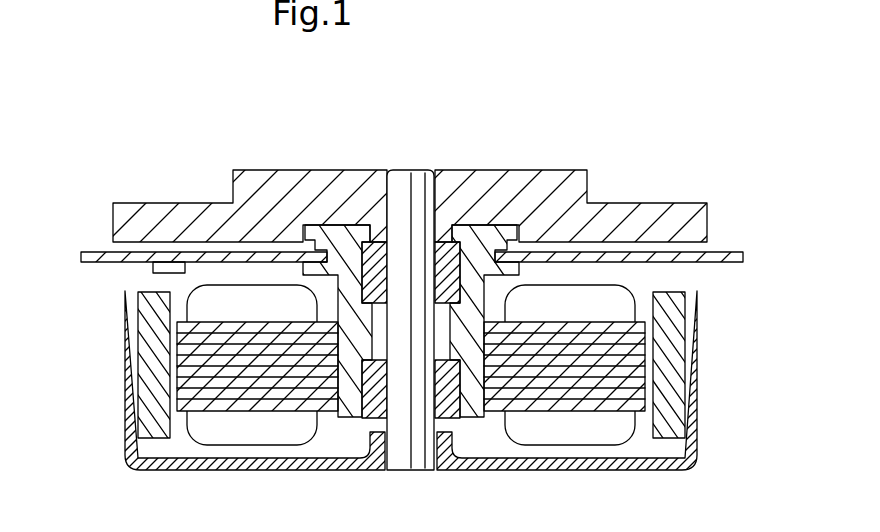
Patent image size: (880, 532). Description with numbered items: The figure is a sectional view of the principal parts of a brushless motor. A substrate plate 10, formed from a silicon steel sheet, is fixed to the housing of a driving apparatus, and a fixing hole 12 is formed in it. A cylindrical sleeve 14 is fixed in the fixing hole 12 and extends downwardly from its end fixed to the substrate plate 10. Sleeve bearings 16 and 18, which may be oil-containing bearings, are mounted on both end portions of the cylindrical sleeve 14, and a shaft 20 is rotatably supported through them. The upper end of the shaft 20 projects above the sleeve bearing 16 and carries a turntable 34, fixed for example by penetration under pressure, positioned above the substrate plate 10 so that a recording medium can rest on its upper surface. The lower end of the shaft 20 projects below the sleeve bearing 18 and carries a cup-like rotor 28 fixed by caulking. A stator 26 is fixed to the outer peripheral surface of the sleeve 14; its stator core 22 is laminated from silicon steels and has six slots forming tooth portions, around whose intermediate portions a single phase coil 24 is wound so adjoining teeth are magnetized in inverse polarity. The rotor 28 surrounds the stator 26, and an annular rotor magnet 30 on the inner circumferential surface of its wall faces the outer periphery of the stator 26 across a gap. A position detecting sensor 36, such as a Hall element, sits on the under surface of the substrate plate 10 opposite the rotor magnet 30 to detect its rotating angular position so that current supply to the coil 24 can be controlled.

The substrate plate 10 is at (730, 250).
The fixing hole 12 is at (340, 250).
The cylindrical sleeve 14 is at (323, 284).
The sleeve bearing 16 is at (462, 272).
The sleeve bearing 18 is at (367, 420).
The shaft 20 is at (403, 180).
The stator core 22 is at (648, 358).
The single phase coil 24 is at (637, 303).
The stator 26 is at (634, 423).
The cup-like rotor 28 is at (125, 412).
The annular rotor magnet 30 is at (140, 350).
The turntable 34 is at (559, 172).
The position detecting sensor 36 is at (152, 268).